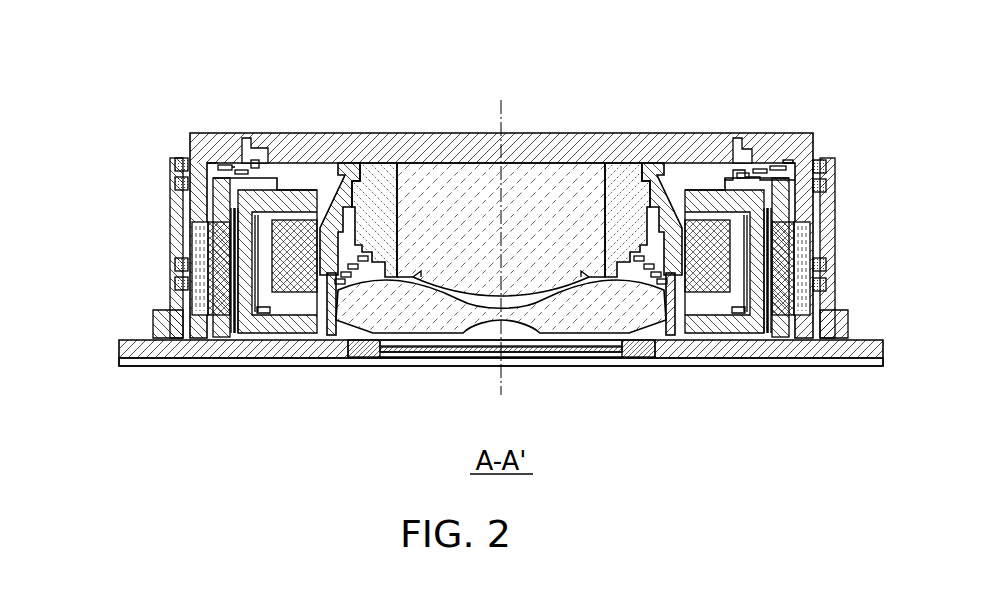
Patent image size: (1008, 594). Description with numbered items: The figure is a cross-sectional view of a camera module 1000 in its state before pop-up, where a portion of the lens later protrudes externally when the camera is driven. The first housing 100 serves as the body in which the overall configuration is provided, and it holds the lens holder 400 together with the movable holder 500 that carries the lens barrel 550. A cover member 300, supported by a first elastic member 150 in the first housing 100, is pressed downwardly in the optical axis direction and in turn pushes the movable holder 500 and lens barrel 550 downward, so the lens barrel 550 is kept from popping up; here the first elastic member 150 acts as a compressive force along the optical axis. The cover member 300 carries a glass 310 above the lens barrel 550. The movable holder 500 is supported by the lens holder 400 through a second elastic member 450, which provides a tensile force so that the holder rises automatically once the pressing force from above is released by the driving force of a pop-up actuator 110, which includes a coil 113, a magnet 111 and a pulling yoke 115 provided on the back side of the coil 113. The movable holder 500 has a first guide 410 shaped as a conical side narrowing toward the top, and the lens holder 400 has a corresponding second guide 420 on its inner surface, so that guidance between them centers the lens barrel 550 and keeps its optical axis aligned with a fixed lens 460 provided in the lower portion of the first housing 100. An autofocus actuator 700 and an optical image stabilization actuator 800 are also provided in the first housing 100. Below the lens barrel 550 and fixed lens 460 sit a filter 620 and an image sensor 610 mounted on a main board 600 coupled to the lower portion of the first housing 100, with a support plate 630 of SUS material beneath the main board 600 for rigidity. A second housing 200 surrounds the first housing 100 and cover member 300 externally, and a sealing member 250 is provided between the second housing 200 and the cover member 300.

The camera module 1000 is at (183, 54).
The cover member 300 is at (203, 133).
The first elastic member 150 is at (258, 138).
The lens holder 400 is at (345, 163).
The movable holder 500 is at (383, 188).
The lens barrel 550 is at (447, 192).
The glass 310 is at (565, 150).
The first guide 410 is at (631, 170).
The second guide 420 is at (660, 200).
The first housing 100 is at (753, 150).
The sealing member 250 is at (174, 164).
The second housing 200 is at (174, 205).
The pop-up actuator 110 is at (77, 215).
The magnet 111 is at (203, 237).
The coil 113 is at (220, 268).
The pulling yoke 115 is at (238, 303).
The autofocus actuator 700 is at (765, 229).
The optical image stabilization actuator 800 is at (705, 266).
The main board 600 is at (252, 350).
The second elastic member 450 is at (358, 290).
The support plate 630 is at (395, 362).
The image sensor 610 is at (465, 352).
The filter 620 is at (535, 346).
The fixed lens 460 is at (600, 318).